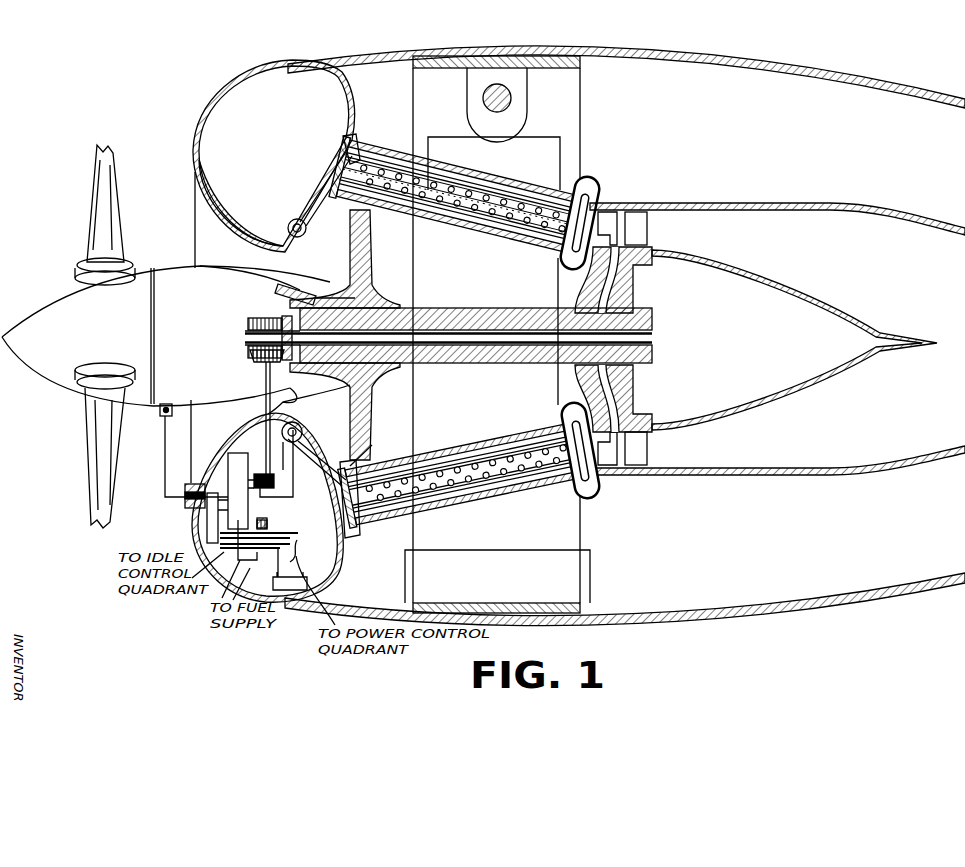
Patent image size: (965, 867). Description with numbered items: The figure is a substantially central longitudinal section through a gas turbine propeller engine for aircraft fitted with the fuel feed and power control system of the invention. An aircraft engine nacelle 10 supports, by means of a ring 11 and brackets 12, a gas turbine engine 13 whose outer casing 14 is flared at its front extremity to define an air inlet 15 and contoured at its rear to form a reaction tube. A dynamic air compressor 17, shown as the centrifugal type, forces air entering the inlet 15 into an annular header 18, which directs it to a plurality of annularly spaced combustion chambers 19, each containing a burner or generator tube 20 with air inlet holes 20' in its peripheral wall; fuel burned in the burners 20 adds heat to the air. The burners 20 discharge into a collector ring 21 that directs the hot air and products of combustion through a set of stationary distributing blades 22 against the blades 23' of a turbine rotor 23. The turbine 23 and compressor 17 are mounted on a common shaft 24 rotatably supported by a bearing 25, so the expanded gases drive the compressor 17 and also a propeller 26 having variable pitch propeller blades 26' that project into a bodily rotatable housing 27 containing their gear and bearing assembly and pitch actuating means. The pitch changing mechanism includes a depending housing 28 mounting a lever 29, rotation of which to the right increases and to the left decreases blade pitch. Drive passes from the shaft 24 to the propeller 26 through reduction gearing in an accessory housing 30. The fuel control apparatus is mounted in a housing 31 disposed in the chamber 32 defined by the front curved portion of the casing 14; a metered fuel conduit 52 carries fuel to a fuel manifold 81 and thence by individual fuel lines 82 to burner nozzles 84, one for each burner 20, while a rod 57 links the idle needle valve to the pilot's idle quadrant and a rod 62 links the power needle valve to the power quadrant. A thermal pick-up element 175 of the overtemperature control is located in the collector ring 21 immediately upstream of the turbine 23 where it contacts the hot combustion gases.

The aircraft engine nacelle 10 is at (648, 42).
The ring 11 is at (572, 70).
The brackets 12 is at (512, 98).
The gas turbine engine 13 is at (600, 182).
The outer casing 14 is at (773, 205).
The air inlet 15 is at (206, 232).
The dynamic air compressor 17 is at (320, 260).
The annular header 18 is at (360, 142).
The combustion chambers 19 is at (500, 184).
The burner or generator tube 20 is at (456, 211).
The air inlet holes 20' is at (455, 219).
The collector ring 21 is at (602, 196).
The stationary distributing blades 22 is at (612, 215).
The turbine rotor 23 is at (756, 339).
The turbine blades 23' is at (662, 338).
The common shaft 24 is at (490, 348).
The bearing 25 is at (478, 316).
The propeller 26 is at (83, 215).
The variable pitch propeller blades 26' is at (85, 345).
The bodily rotatable housing 27 is at (56, 354).
The depending housing 28 is at (175, 411).
The lever 29 is at (163, 418).
The accessory housing 30 is at (202, 288).
The housing 31 is at (228, 470).
The chamber 32 is at (330, 570).
The metered fuel conduit 52 is at (282, 463).
The rod 57 is at (275, 540).
The rod 62 is at (300, 540).
The fuel manifold 81 is at (268, 412).
The individual fuel lines 82 is at (301, 218).
The burner nozzles 84 is at (338, 150).
The thermal pick-up element 175 is at (604, 482).